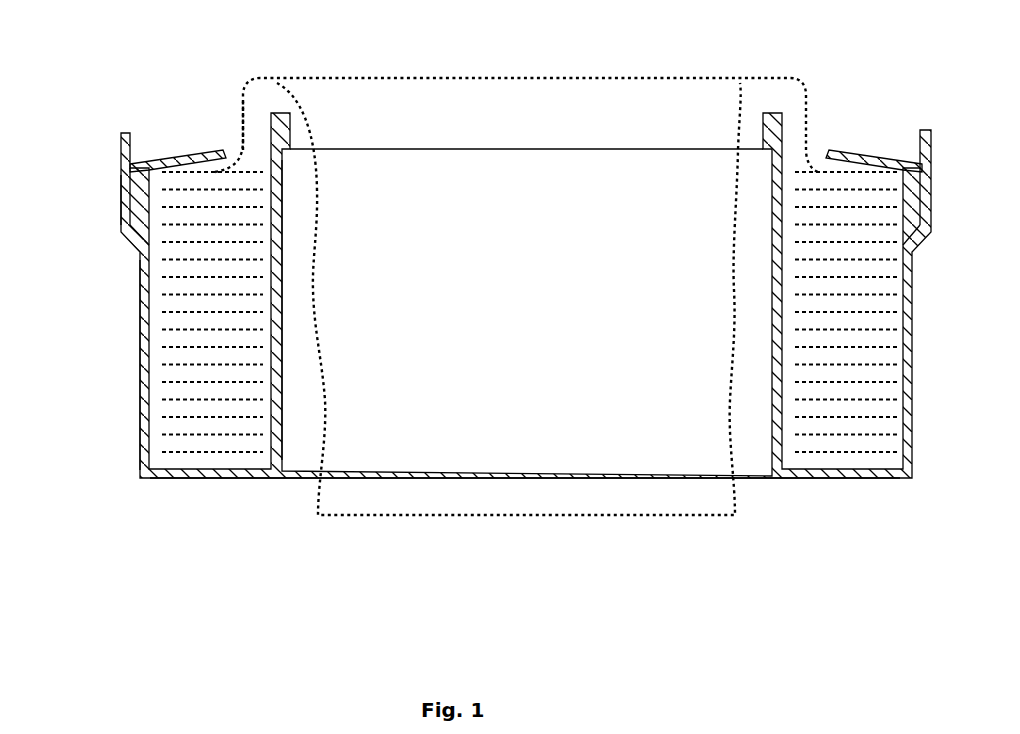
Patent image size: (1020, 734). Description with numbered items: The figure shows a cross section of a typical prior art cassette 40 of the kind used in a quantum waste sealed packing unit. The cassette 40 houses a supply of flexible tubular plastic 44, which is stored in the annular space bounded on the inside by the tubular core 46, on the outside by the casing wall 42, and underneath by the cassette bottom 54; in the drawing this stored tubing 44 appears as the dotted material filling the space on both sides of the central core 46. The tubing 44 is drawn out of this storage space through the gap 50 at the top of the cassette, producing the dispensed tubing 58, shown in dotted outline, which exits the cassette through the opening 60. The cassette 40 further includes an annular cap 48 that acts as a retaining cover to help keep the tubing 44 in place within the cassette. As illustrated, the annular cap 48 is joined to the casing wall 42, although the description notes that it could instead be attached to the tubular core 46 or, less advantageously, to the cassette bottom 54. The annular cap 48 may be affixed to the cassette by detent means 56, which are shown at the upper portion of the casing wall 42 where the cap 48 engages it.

The cassette 40 is at (126, 428).
The casing wall 42 is at (145, 385).
The flexible tubular plastic 44 is at (190, 263).
The tubular core 46 is at (282, 288).
The annular cap 48 is at (160, 152).
The gap 50 is at (228, 122).
The cassette bottom 54 is at (140, 480).
The detent means 56 is at (126, 183).
The dispensed tubing 58 is at (330, 512).
The opening 60 is at (449, 125).